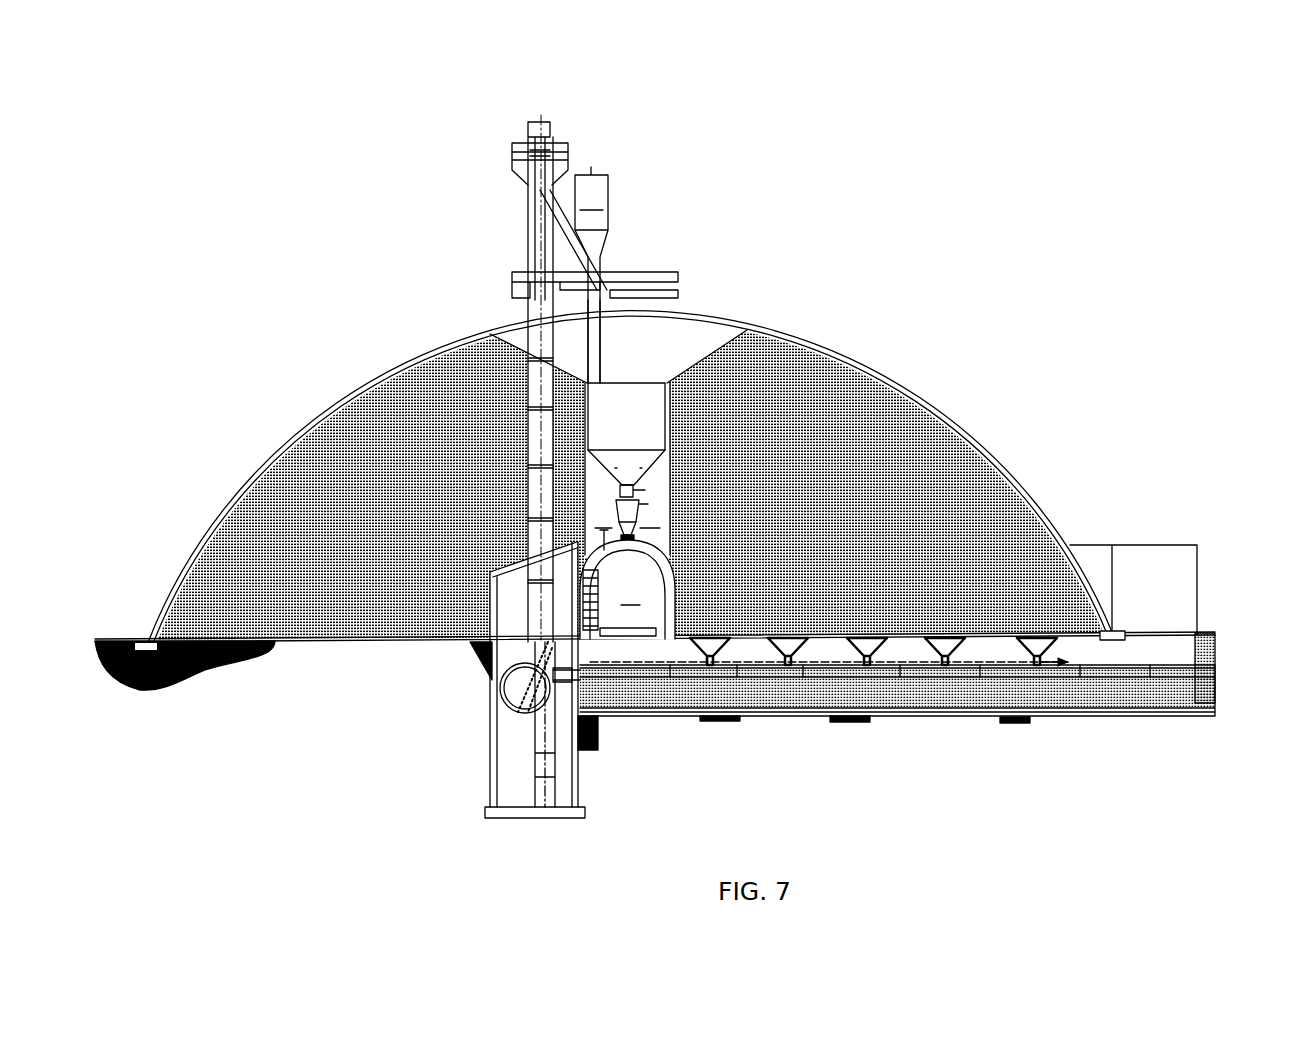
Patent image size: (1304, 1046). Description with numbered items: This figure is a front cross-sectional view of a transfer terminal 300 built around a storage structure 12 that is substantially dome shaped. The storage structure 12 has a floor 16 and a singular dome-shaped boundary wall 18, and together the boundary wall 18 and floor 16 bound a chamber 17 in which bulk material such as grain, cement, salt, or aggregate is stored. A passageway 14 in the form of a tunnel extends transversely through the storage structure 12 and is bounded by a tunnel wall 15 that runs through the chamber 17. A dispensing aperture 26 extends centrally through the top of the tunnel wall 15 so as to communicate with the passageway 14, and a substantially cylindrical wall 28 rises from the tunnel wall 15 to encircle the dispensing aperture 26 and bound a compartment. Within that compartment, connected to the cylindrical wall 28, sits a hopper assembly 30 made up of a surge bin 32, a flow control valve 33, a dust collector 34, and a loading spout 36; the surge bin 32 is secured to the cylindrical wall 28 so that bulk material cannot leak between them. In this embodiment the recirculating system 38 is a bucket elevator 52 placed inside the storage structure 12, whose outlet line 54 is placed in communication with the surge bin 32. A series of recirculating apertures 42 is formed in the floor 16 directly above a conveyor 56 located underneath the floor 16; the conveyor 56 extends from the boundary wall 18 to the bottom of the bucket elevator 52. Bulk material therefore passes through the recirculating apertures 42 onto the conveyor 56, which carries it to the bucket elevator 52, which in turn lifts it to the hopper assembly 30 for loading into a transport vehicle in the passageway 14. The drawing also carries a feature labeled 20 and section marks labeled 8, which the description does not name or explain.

The transfer terminal 300 is at (673, 382).
The storage structure 12 is at (900, 377).
The boundary wall 18 is at (938, 412).
The chamber 17 is at (973, 477).
The footing 20 is at (115, 640).
The floor 16 is at (373, 645).
The passageway 14 is at (680, 600).
The tunnel wall 15 is at (669, 584).
The hopper assembly 30 is at (638, 362).
The surge bin 32 is at (665, 420).
The substantially cylindrical wall 28 is at (663, 460).
The flow control valve 33 is at (633, 488).
The dust collector 34 is at (637, 512).
The dispensing aperture 26 is at (637, 540).
The loading spout 36 is at (630, 542).
The recirculating system 38 is at (564, 378).
The bucket elevator 52 is at (535, 253).
The outlet line 54 is at (597, 333).
The recirculating apertures 42 is at (788, 668).
The conveyor 56 is at (853, 670).
The section line 8- 8 is at (622, 162).